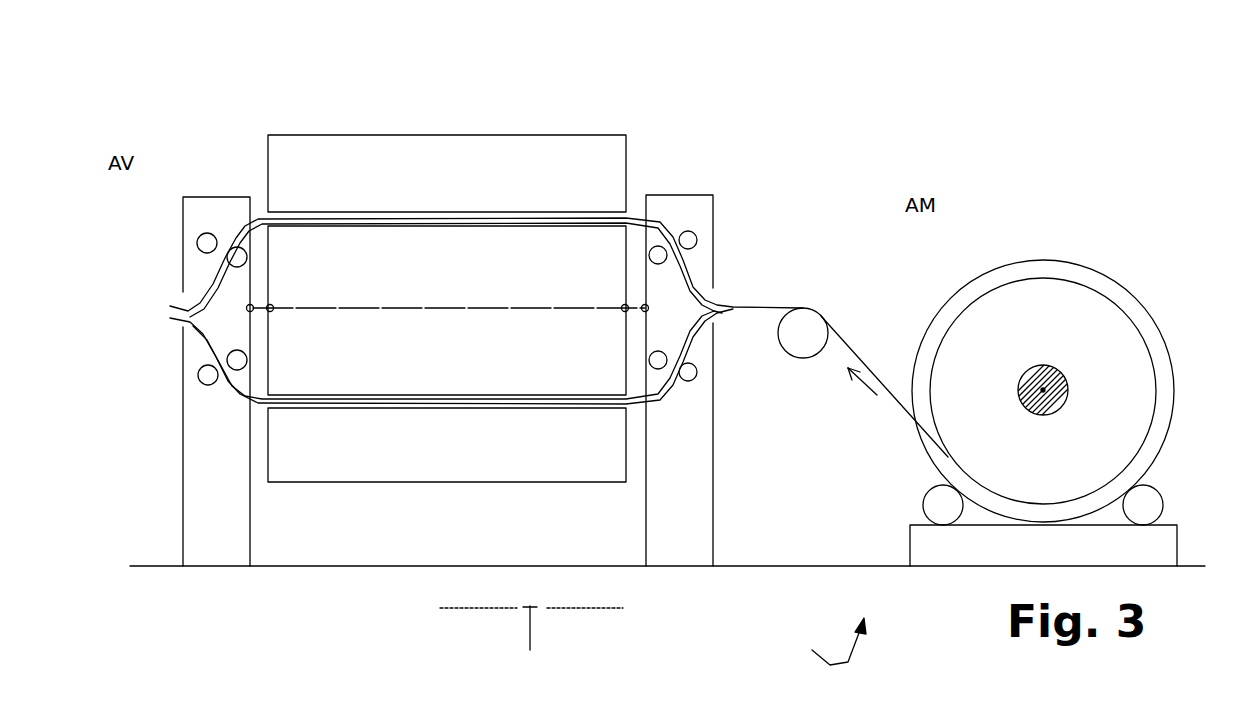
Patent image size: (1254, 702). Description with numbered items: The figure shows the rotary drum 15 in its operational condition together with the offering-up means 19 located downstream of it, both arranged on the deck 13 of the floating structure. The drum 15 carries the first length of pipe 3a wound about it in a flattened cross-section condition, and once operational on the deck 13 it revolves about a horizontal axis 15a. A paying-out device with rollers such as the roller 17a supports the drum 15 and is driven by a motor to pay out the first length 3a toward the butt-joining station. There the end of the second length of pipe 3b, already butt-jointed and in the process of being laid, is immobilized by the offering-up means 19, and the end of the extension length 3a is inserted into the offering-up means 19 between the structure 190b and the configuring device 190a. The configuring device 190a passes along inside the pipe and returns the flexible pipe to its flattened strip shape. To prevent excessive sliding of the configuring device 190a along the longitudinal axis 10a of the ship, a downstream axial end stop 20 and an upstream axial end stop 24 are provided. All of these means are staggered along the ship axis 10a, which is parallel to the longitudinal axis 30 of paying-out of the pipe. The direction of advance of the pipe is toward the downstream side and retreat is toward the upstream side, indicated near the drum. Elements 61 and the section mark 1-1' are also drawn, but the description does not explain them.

The deck 13 is at (667, 400).
The structure 190b is at (447, 121).
The offering-up means 19 is at (469, 221).
The configuring device 190a is at (447, 472).
The second length of pipe 3b is at (486, 248).
The downstream axial end stop 20 is at (172, 318).
The upstream axial end stop 24 is at (718, 257).
The longitudinal axis of paying-out of the pipe 30 is at (449, 283).
The pins 61 is at (448, 398).
The first length of pipe 3a is at (863, 359).
The rotary drum 15 is at (1043, 357).
The horizontal axis 15a is at (1113, 379).
The roller 17a is at (994, 522).
The longitudinal axis of the ship 10a is at (529, 636).
The direction arrow 1-1' is at (817, 641).